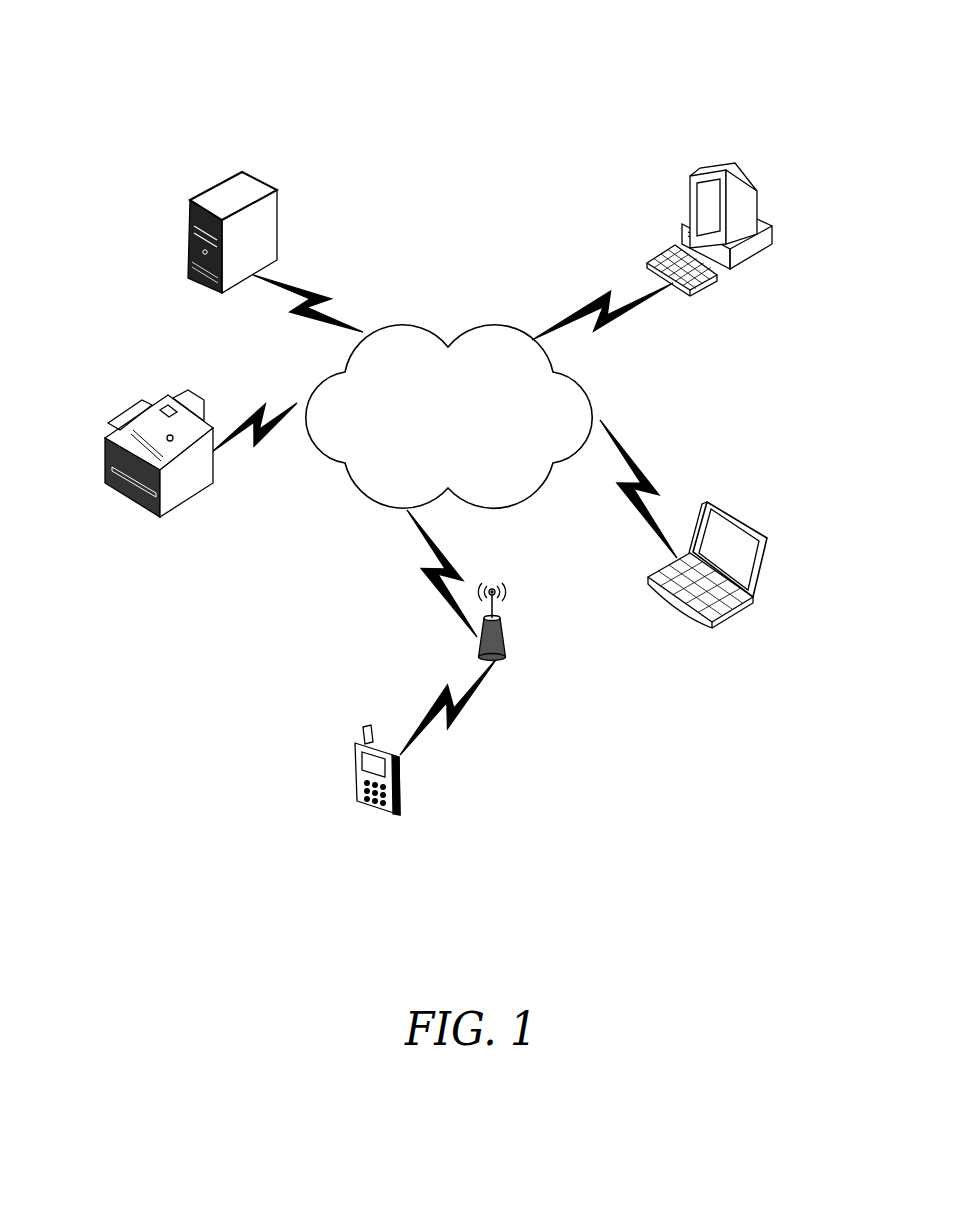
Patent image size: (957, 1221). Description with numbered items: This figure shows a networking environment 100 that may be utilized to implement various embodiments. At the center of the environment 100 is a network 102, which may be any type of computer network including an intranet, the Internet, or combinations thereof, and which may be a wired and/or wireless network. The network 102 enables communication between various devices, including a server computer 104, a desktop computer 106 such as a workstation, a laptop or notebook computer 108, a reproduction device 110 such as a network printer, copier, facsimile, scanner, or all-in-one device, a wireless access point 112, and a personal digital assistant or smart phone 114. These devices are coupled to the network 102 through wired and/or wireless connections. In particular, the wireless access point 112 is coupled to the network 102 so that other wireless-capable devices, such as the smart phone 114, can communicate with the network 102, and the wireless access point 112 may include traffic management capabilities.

The networking environment 100 is at (690, 106).
The network 102 is at (462, 440).
The server computer 104 is at (280, 223).
The desktop computer 106 is at (686, 223).
The laptop computer 108 is at (755, 548).
The reproduction device 110 is at (137, 487).
The wireless access point 112 is at (427, 622).
The personal digital assistant or smart phone 114 is at (434, 795).